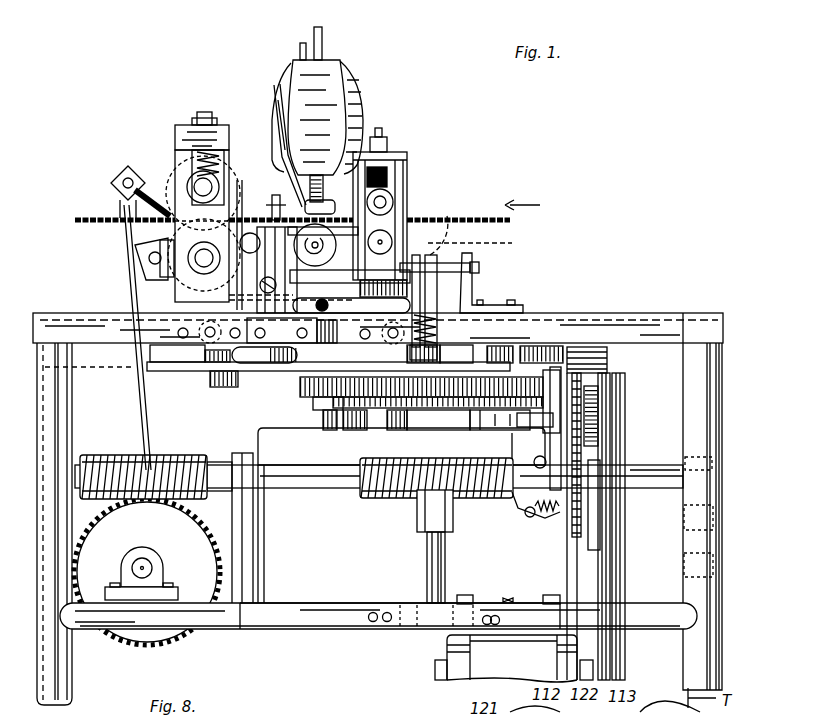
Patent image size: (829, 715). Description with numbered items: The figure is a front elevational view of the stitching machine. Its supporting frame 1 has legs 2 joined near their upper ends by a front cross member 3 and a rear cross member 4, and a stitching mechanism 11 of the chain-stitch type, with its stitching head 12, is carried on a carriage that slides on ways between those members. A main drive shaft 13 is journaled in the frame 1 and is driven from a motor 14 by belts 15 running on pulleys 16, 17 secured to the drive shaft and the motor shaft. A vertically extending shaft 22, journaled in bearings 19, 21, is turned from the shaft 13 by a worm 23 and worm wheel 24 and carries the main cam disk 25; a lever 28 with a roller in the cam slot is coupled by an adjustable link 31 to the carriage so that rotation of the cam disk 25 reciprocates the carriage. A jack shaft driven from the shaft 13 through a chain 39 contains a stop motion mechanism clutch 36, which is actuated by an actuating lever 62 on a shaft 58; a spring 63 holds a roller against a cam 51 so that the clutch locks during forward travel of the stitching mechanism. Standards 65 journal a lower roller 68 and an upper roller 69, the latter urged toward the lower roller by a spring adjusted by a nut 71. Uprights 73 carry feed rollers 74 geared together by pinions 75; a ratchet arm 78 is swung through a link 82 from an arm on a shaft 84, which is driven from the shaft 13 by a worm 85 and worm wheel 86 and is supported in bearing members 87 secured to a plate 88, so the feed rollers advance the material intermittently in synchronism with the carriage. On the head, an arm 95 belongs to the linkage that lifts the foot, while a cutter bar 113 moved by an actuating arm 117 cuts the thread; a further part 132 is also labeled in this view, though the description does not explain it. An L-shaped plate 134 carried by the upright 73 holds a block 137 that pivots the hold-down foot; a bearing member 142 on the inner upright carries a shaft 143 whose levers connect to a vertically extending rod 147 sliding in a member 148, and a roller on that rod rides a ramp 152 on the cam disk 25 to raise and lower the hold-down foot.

The supporting frame 1 is at (733, 409).
The legs 2 is at (37, 530).
The front cross member 3 is at (634, 321).
The rear cross member 4 is at (34, 334).
The stitching mechanism 11 is at (379, 99).
The stitching head 12 is at (334, 120).
The main drive shaft 13 is at (303, 474).
The motor 14 is at (487, 665).
The belts 15 is at (612, 578).
The pulley 16 is at (622, 523).
The pulley 17 is at (625, 668).
The bearing 19 is at (437, 631).
The bearing 21 is at (477, 360).
The vertically extending shaft 22 is at (427, 557).
The worm 23 is at (392, 492).
The worm wheel 24 is at (425, 494).
The main cam disk 25 is at (303, 388).
The lever 28 is at (185, 372).
The adjustable link 31 is at (280, 358).
The stop motion mechanism clutch 36 is at (583, 352).
The chain 39 is at (585, 430).
The cam 51 is at (376, 406).
The shaft 58 is at (513, 459).
The actuating lever 62 is at (510, 502).
The spring 63 is at (552, 508).
The standards 65 is at (408, 183).
The lower roller 68 is at (470, 236).
The upper roller 69 is at (410, 200).
The nut 71 is at (388, 148).
The uprights 73 is at (175, 153).
The feed rollers 74 is at (175, 178).
The pinions 75 is at (430, 157).
The ratchet arm 78 is at (140, 182).
The link 82 is at (140, 408).
The shaft 84 is at (146, 566).
The worm 85 is at (172, 462).
The worm wheel 86 is at (234, 516).
The bearing members 87 is at (138, 551).
The plate 88 is at (226, 605).
The arm 95 is at (290, 165).
The cutter bar 113 is at (256, 185).
The actuating arm 117 is at (226, 287).
The link 132 is at (410, 168).
The plate 134 is at (226, 240).
The block 137 is at (270, 210).
The bearing member 142 is at (479, 268).
The shaft 143 is at (440, 300).
The vertically extending rod 147 is at (524, 247).
The member 148 is at (569, 287).
The ramp 152 is at (366, 378).